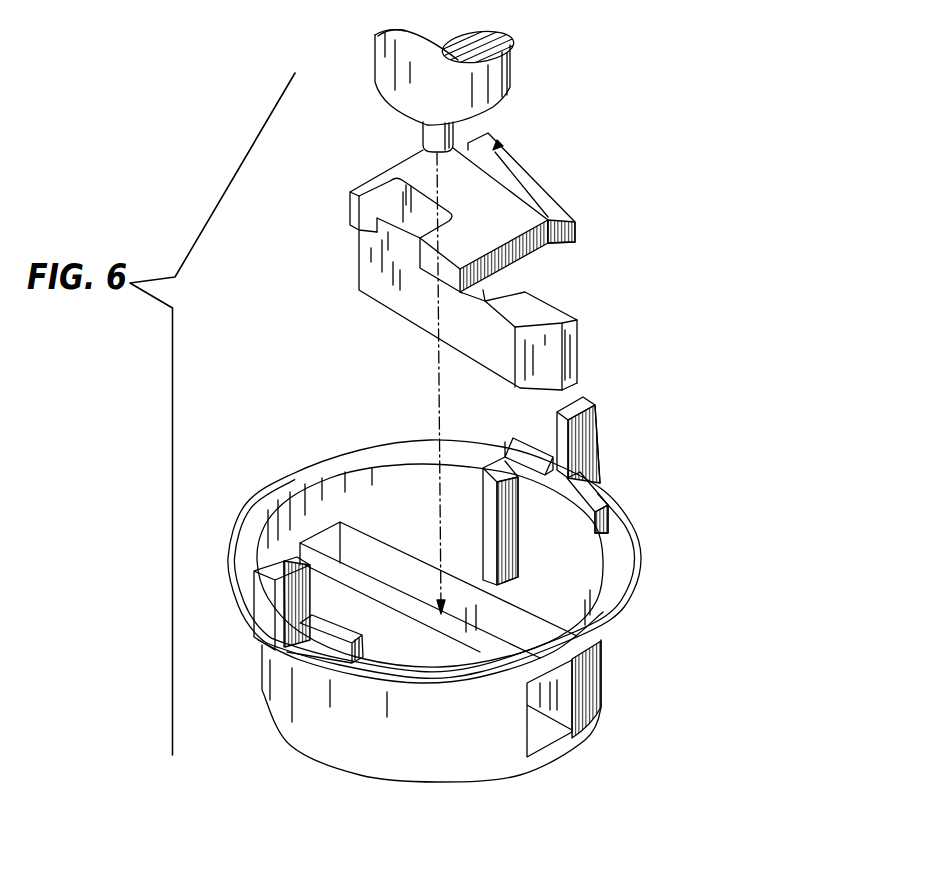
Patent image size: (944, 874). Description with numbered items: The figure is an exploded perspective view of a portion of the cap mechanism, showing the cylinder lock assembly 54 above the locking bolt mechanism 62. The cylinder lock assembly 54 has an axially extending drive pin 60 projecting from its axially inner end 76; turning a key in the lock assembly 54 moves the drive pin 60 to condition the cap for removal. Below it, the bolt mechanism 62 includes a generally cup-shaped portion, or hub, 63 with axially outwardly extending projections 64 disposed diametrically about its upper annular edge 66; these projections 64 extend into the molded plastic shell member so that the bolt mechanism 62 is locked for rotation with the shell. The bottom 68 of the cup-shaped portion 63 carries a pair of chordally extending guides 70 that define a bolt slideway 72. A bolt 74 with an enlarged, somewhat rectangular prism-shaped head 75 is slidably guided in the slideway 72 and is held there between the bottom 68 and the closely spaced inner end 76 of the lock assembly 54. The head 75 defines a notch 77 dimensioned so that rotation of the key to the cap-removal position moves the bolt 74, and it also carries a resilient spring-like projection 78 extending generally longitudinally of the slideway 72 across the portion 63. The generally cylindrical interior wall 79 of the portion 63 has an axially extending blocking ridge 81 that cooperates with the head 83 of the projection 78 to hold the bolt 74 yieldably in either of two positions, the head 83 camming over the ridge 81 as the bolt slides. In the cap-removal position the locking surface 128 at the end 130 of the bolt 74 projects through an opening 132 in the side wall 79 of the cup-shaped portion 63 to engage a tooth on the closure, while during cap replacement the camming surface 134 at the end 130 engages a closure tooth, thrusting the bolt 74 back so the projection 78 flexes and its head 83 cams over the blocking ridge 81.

The cylinder lock assembly 54 is at (522, 73).
The axially inner end of the lock assembly 76 is at (396, 112).
The drive pin 60 is at (432, 137).
The head of projection 83 is at (497, 141).
The notch 77 is at (387, 198).
The resilient spring-like projection 78 is at (533, 183).
The bolt 74 is at (367, 267).
The head 75 is at (530, 252).
The locking surface 128 is at (563, 307).
The end of bolt 130 is at (548, 318).
The camming surface 134 is at (550, 367).
The chordally extending guides 70 is at (373, 520).
The blocking ridge 81 is at (487, 517).
The axially outwardly extending projections 64 is at (588, 433).
The generally cylindrical interior wall 79 is at (560, 522).
The upper annular edge 66 is at (640, 588).
The bottom 68 is at (540, 610).
The locking bolt mechanism 62 is at (723, 620).
The bolt slideway 72 is at (458, 633).
The cup-shaped portion 63 is at (483, 772).
The opening 132 is at (533, 737).